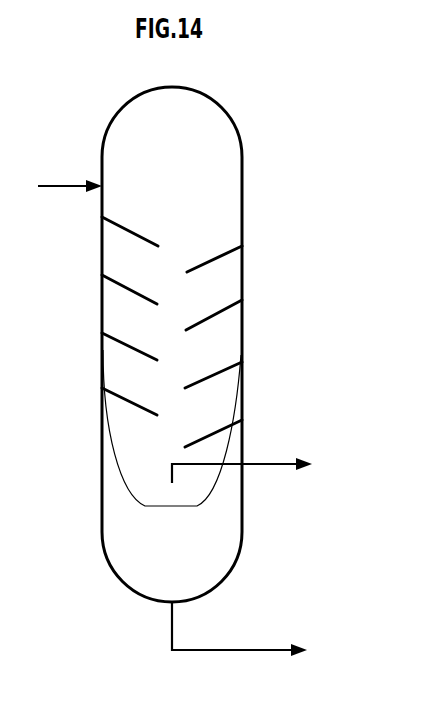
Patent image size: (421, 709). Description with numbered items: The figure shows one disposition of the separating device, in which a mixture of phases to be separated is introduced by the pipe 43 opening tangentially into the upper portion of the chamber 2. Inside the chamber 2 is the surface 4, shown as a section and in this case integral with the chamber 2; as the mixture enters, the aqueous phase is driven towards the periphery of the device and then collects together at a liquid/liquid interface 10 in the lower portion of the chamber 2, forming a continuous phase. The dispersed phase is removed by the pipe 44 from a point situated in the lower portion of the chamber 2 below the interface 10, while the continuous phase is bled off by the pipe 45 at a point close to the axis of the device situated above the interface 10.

The chamber 2 is at (243, 203).
The surface 4 is at (215, 258).
The liquid/liquid interface 10 is at (166, 506).
The pipe 43 is at (58, 184).
The pipe 44 is at (263, 647).
The pipe 45 is at (270, 462).